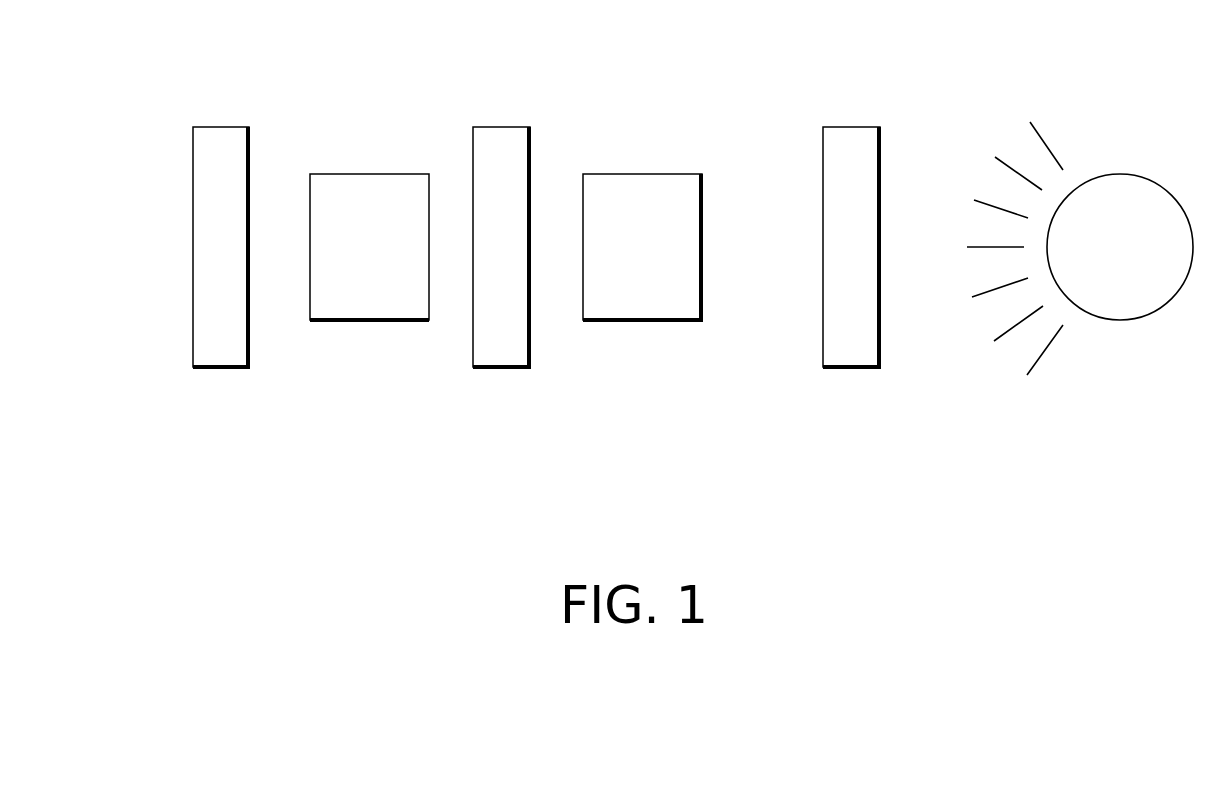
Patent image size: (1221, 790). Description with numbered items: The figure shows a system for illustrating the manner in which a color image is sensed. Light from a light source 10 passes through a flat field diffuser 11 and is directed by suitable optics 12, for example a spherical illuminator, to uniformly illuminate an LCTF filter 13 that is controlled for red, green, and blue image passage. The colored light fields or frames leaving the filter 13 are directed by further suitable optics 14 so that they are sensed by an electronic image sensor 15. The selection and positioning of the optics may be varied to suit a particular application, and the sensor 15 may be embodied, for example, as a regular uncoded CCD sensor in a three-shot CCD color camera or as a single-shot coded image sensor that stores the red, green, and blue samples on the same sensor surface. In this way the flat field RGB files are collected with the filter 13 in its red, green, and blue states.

The light source 10 is at (1141, 176).
The flat field diffuser 11 is at (852, 127).
The optics 12 is at (652, 262).
The LCTF filter 13 is at (501, 127).
The optics 14 is at (380, 257).
The electronic image sensor 15 is at (220, 127).